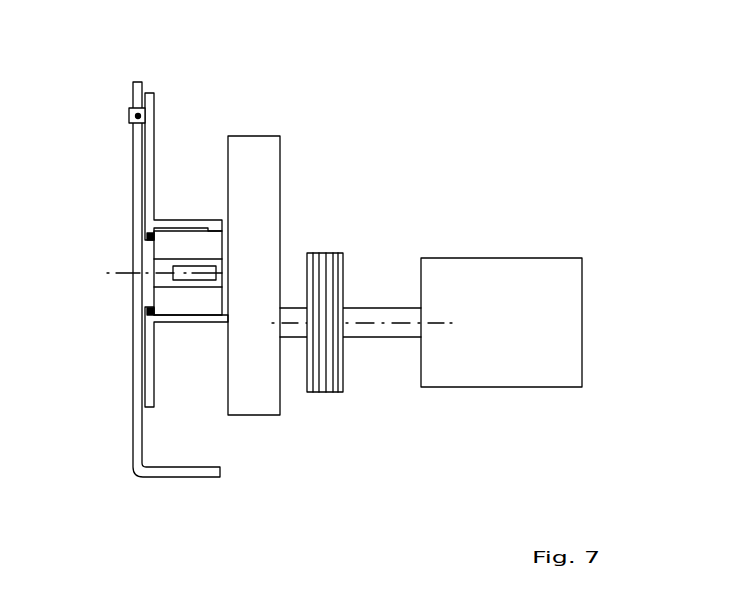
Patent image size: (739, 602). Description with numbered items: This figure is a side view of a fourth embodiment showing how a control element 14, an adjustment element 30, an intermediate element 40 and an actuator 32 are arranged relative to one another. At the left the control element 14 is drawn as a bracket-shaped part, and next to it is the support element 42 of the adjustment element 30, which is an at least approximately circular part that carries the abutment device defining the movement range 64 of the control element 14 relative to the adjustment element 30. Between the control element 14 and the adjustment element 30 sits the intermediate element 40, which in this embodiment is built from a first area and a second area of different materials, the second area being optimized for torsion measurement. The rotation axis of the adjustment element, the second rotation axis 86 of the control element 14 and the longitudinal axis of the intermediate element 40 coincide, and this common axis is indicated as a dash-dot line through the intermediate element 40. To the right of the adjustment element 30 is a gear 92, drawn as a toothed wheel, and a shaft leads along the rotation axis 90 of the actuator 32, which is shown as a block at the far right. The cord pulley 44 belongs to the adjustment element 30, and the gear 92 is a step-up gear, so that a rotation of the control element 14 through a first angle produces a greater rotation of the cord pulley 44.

The control element 14 is at (118, 440).
The adjustment element 30 is at (333, 125).
The actuator 32 is at (541, 270).
The intermediate element 40 is at (195, 292).
The support element 42 is at (150, 191).
The cord pulley 44 is at (323, 252).
The movement range 64 is at (205, 130).
The second rotation axis 86 is at (127, 275).
The rotation axis 90 is at (380, 326).
The gear 92 is at (298, 408).